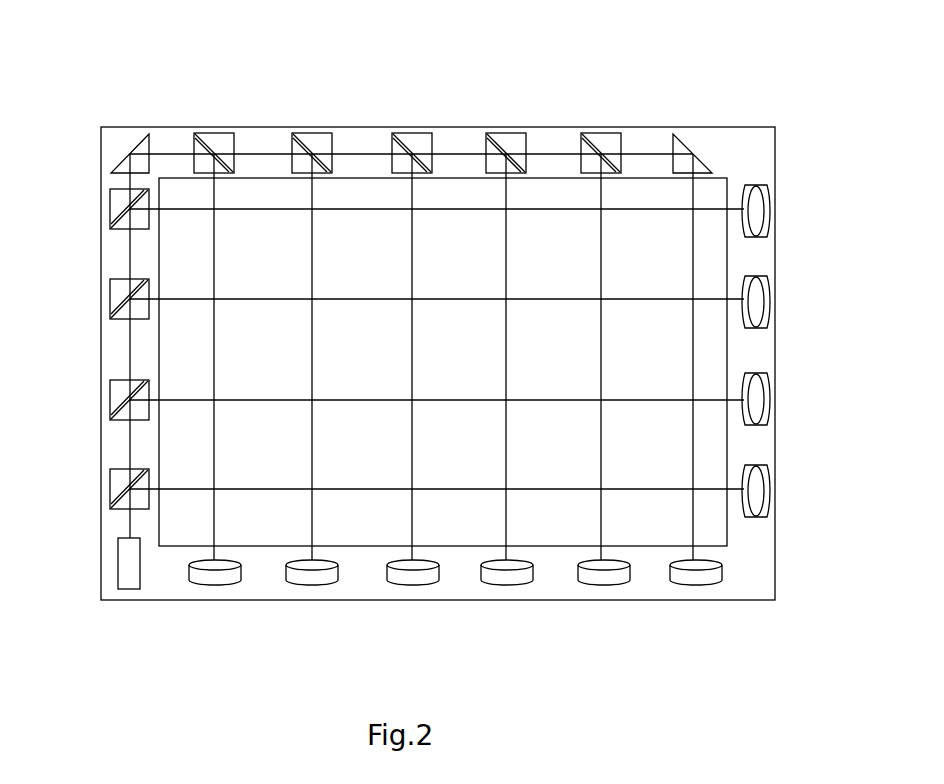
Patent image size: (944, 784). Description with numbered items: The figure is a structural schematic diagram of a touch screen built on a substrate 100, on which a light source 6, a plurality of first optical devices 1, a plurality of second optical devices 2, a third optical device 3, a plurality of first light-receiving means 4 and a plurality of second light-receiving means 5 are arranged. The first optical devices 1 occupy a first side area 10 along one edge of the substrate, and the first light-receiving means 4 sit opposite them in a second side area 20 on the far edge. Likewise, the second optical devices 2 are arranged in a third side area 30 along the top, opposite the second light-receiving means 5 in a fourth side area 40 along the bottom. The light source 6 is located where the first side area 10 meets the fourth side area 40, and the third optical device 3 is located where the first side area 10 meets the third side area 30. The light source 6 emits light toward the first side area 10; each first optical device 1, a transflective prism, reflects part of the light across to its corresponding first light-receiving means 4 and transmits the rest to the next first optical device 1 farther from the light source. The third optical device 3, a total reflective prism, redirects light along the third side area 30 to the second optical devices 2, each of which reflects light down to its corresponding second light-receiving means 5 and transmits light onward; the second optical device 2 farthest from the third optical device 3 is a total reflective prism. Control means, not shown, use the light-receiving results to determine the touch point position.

The first optical device 1 is at (117, 297).
The second optical device 2 is at (216, 147).
The third optical device 3 is at (143, 147).
The first light-receiving means 4 is at (755, 405).
The second light-receiving means 5 is at (510, 573).
The light source 6 is at (123, 570).
The first side area 10 is at (120, 257).
The second side area 20 is at (809, 351).
The third side area 30 is at (731, 145).
The fourth side area 40 is at (455, 610).
The substrate 100 is at (734, 563).